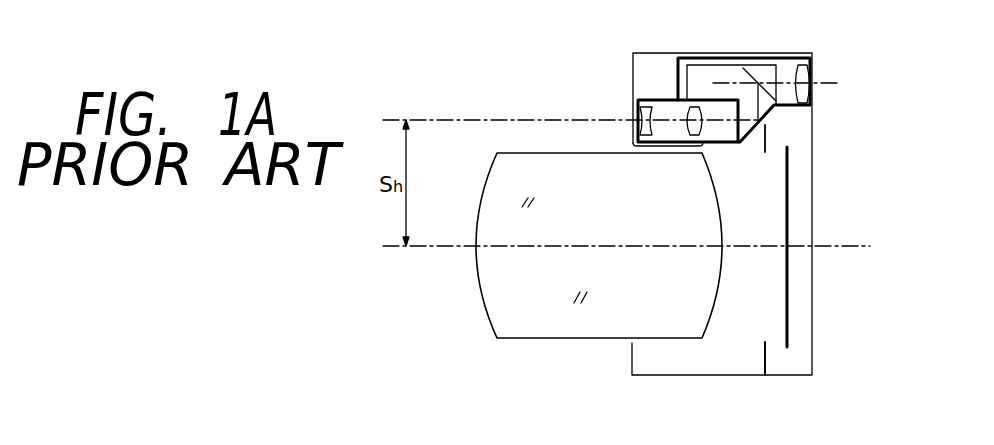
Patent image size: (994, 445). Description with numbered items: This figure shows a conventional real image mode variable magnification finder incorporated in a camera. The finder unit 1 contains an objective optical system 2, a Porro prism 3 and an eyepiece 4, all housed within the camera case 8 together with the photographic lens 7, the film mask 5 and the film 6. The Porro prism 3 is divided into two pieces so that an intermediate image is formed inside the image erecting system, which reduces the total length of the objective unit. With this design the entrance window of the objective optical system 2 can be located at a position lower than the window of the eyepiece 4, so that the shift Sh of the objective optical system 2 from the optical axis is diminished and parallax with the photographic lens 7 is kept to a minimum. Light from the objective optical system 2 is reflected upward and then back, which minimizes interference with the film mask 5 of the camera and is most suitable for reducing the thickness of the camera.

The finder unit 1 is at (775, 109).
The objective optical system 2 is at (668, 157).
The Porro prism 3 is at (705, 72).
The eyepiece 4 is at (812, 76).
The film mask 5 is at (767, 137).
The film 6 is at (789, 287).
The photographic lens 7 is at (487, 317).
The camera case 8 is at (812, 358).